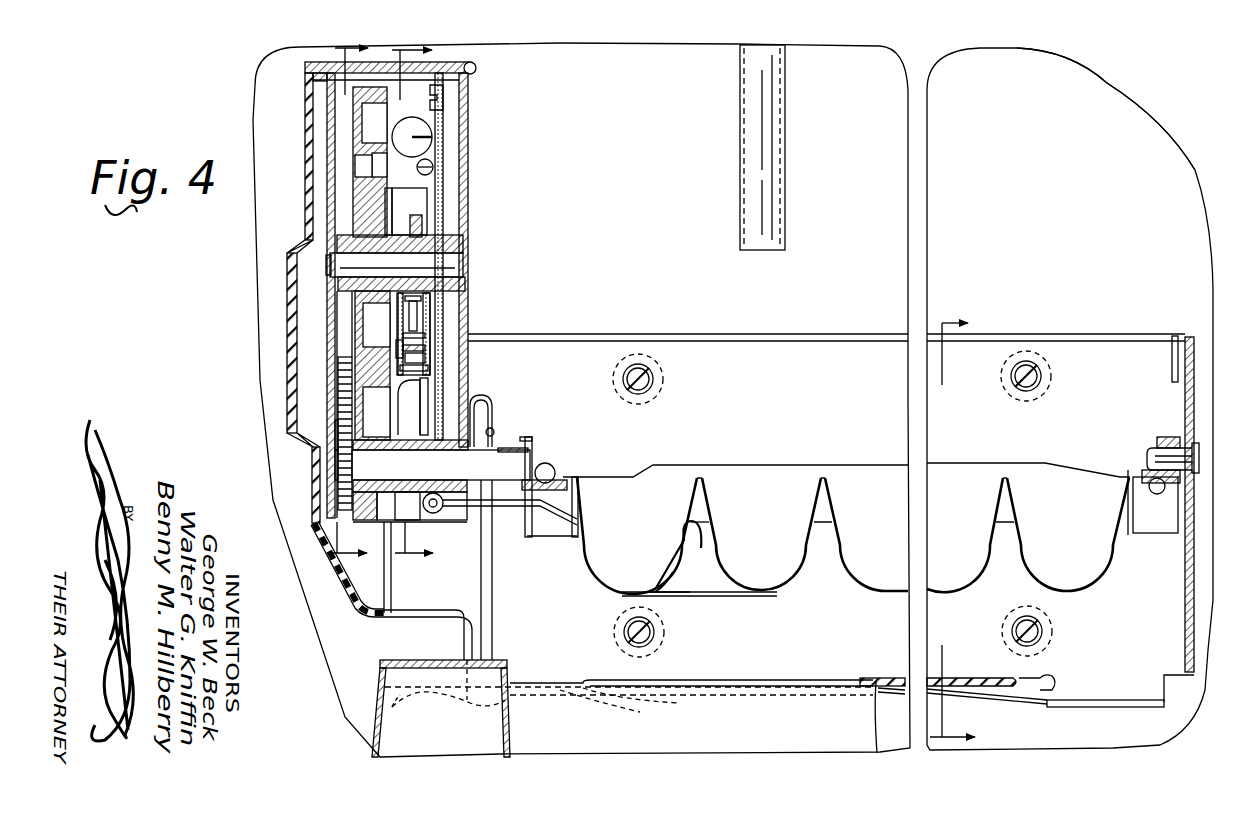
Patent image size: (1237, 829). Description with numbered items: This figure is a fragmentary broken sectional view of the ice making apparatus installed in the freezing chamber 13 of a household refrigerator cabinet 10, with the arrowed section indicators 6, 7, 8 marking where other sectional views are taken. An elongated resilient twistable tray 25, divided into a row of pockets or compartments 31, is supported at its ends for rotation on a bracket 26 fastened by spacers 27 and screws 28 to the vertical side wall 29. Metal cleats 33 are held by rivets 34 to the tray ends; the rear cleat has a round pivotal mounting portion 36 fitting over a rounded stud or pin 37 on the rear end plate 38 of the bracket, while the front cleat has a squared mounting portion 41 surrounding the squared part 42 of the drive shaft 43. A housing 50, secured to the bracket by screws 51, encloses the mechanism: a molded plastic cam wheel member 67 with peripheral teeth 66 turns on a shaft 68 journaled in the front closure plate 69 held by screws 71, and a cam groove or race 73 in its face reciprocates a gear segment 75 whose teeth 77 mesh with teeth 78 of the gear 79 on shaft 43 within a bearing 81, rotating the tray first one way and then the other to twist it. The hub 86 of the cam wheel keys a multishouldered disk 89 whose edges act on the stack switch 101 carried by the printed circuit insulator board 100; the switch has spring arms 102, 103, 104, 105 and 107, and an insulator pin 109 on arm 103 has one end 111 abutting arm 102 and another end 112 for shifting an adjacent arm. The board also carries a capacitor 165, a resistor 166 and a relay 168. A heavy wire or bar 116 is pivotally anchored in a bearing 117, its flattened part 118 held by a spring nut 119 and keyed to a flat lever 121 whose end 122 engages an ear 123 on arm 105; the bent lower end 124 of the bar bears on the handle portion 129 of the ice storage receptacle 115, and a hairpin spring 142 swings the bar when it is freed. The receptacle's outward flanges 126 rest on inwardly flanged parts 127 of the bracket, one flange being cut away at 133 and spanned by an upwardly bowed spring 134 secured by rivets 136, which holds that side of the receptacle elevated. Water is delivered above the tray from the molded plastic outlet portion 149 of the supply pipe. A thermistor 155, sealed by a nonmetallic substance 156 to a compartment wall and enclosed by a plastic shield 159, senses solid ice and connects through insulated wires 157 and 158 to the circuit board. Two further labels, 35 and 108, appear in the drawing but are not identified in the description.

The section line 6- 6 is at (962, 516).
The section line 7- 7 is at (347, 302).
The section line 8- 8 is at (412, 302).
The household refrigerator cabinet 10 is at (1110, 83).
The freezing or frozen food storage chamber 13 is at (1092, 171).
The freezing device, mold or tray 25 is at (768, 465).
The bracket 26 is at (1060, 336).
The spacers 27 is at (664, 380).
The screws 28 is at (628, 374).
The vertical side wall 29 is at (1150, 145).
The pockets or compartments 31 is at (632, 515).
The metal cleats 33 is at (575, 477).
The rivets 34 is at (552, 470).
The spindle flange 35 is at (1194, 442).
The round pivotal mounting portion 36 is at (1165, 438).
The rounded stud or pin 37 is at (1147, 457).
The rear end plate of bracket 38 is at (1190, 336).
The squared or flattened mounting portion 41 is at (518, 448).
The squared or flattened part of drive shaft 42 is at (532, 445).
The drive stud or shaft 43 is at (500, 507).
The housing 50 is at (470, 90).
The screws 51 is at (488, 398).
The teeth 66 is at (372, 85).
The molded plastic disk-like member 67 is at (355, 118).
The shaft 68 is at (340, 260).
The front closure plate 69 is at (318, 70).
The screws 71 is at (305, 100).
The cam groove or race 73 is at (365, 165).
The gear segment 75 is at (340, 340).
The teeth 77 is at (345, 376).
The teeth 78 is at (342, 440).
The gear 79 is at (345, 424).
The bearing 81 is at (417, 523).
The hub 86 is at (380, 237).
The multishouldered disk 89 is at (422, 225).
The insulator board 100 is at (440, 120).
The stack switch 101 is at (428, 325).
The spring arm 102 is at (425, 295).
The spring arm 103 is at (403, 332).
The spring arm 104 is at (425, 336).
The spring arm 105 is at (395, 355).
The spring arm 107 is at (412, 372).
The contact arm 108 is at (425, 368).
The insulator pin 109 is at (400, 335).
The end of insulator pin 111 is at (415, 305).
The other end of insulator pin 112 is at (403, 356).
The ice block storage receptacle 115 is at (515, 737).
The heavy round wire or bar 116 is at (493, 590).
The bearing 117 is at (462, 452).
The flattened extension of bar 118 is at (413, 448).
The spring nut 119 is at (405, 448).
The flat lever 121 is at (432, 448).
The end of lever 122 is at (425, 358).
The ear 123 is at (428, 350).
The angularly bent lower end of bar 124 is at (457, 657).
The outward flanges 126 is at (968, 678).
The inwardly flanged parts 127 is at (585, 712).
The handle portion 129 is at (378, 728).
The cut away portion 133 is at (1048, 683).
The bowed spring 134 is at (630, 698).
The rivets 136 is at (495, 725).
The hairpin spring 142 is at (494, 425).
The molded plastic pipe portion 149 is at (745, 128).
The thermistor 155 is at (670, 575).
The nonmetallic substance 156 is at (674, 596).
The insulated wire 157 is at (690, 540).
The insulated wire 158 is at (705, 560).
The molded plastic shield or cover 159 is at (725, 597).
The capacitor or condenser 165 is at (425, 130).
The resistor 166 is at (432, 172).
The relay 168 is at (420, 200).